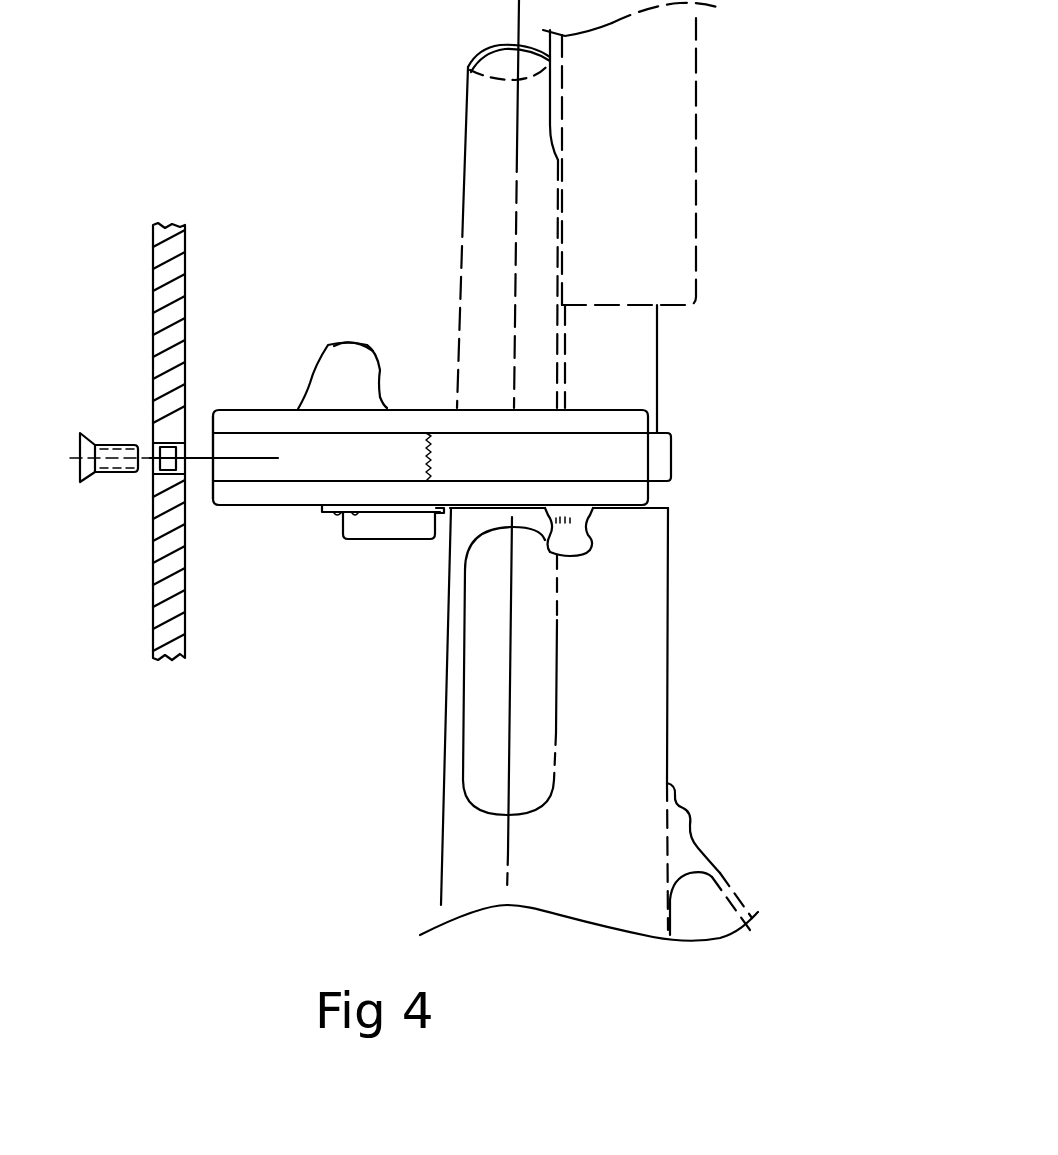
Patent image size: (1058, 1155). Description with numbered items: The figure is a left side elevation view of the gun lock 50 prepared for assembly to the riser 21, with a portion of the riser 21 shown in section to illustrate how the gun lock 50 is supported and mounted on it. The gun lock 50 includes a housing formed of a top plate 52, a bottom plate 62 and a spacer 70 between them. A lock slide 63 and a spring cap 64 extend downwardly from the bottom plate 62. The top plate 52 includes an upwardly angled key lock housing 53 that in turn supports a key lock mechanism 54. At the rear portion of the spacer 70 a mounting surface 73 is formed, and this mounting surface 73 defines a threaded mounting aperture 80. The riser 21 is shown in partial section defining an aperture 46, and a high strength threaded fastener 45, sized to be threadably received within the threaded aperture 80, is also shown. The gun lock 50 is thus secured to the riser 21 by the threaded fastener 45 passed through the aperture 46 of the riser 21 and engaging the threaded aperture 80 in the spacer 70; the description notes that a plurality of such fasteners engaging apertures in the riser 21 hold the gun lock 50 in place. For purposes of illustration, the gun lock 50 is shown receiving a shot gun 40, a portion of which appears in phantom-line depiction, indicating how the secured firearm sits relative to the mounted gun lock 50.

The riser 21 is at (150, 620).
The shot gun 40 is at (696, 152).
The threaded fastener 45 is at (110, 445).
The aperture 46 is at (173, 467).
The gun lock 50 is at (337, 283).
The top plate 52 is at (273, 410).
The knob 53 is at (327, 377).
The key lock mechanism 54 is at (360, 343).
The bottom plate 62 is at (257, 497).
The lock slide 63 is at (593, 547).
The spring cap 64 is at (400, 542).
The spacer 70 is at (302, 458).
The mounting surface 73 is at (213, 455).
The threaded mounting aperture 80 is at (213, 467).